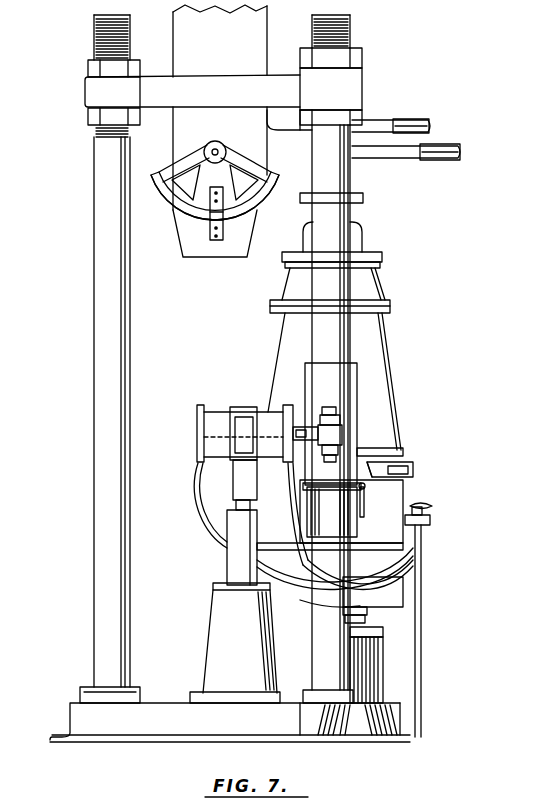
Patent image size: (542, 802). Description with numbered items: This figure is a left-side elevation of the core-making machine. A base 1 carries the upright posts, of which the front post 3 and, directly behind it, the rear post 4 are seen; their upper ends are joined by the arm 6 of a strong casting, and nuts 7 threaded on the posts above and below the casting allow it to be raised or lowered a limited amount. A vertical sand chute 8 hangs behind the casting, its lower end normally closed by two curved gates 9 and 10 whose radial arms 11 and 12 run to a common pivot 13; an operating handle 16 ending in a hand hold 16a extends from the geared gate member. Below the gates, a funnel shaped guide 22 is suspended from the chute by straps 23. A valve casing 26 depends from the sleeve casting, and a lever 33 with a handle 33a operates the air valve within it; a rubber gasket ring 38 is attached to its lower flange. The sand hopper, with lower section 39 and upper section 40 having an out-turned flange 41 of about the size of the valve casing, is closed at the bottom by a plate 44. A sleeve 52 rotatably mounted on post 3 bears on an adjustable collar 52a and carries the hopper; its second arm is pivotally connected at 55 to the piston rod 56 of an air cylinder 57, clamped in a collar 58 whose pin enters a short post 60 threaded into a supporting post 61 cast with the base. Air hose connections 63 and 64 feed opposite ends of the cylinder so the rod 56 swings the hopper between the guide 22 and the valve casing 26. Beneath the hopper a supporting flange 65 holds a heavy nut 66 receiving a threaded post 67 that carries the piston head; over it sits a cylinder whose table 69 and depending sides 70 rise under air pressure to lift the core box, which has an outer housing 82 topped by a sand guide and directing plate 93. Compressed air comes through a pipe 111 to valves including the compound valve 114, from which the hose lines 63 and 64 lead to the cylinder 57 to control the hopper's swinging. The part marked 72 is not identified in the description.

The base 1 is at (178, 717).
The post 3 is at (342, 347).
The post 4 is at (103, 450).
The arm 6 is at (212, 90).
The nuts 7 is at (88, 65).
The sand chute 8 is at (258, 34).
The curved gate 9 is at (223, 170).
The curved gate 10 is at (266, 196).
The radial arms 11 is at (183, 167).
The radial arms 12 is at (232, 160).
The pivot 13 is at (217, 148).
The operating handle 16 is at (293, 128).
The hand hold 16a is at (414, 122).
The funnel shaped guide 22 is at (200, 252).
The straps 23 is at (212, 226).
The valve casing 26 is at (356, 240).
The lever 33 is at (390, 158).
The handle 33a is at (446, 160).
The rubber gasket ring 38 is at (378, 258).
The lower section of sand hopper 39 is at (378, 372).
The upper section of sand hopper 40 is at (380, 292).
The out-turned flange 41 is at (378, 267).
The plate 44 is at (393, 456).
The sleeve 52 is at (360, 395).
The collar 52a is at (318, 534).
The pivotal connection 55 is at (327, 407).
The piston rod 56 is at (318, 432).
The air cylinder 57 is at (212, 420).
The collar 58 is at (246, 415).
The short post 60 is at (236, 506).
The supporting post 61 is at (233, 550).
The air hose connection 63 is at (196, 487).
The air hose connection 64 is at (291, 517).
The supporting flange 65 is at (386, 676).
The heavy nut 66 is at (384, 632).
The threaded post 67 is at (366, 618).
The table 69 is at (360, 550).
The depending sides 70 is at (398, 592).
The pipe 72 is at (402, 610).
The outer housing 82 is at (393, 500).
The sand guide and directing plate 93 is at (406, 470).
The pipe 111 is at (422, 635).
The compound valve 114 is at (424, 548).